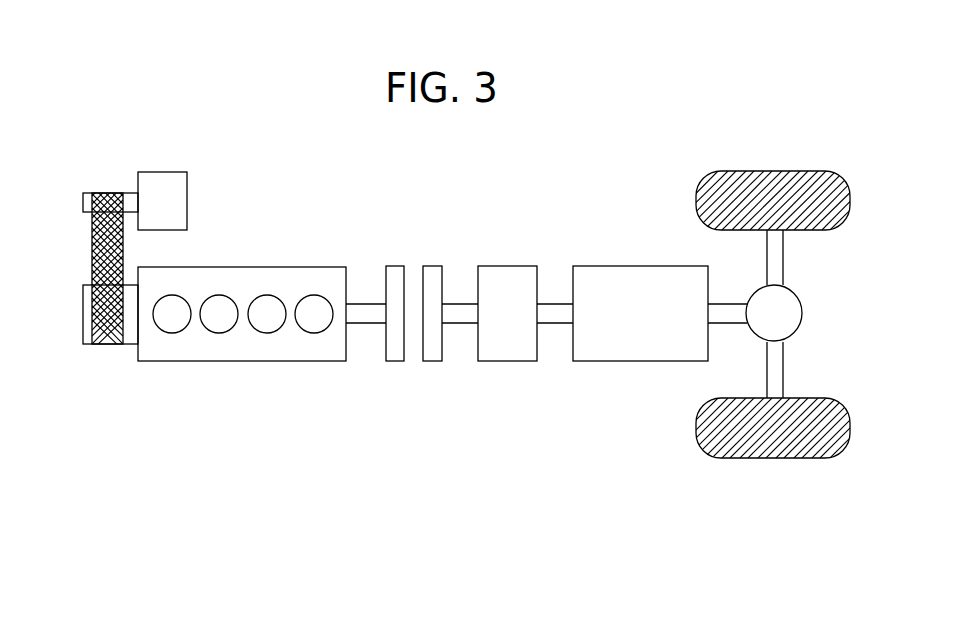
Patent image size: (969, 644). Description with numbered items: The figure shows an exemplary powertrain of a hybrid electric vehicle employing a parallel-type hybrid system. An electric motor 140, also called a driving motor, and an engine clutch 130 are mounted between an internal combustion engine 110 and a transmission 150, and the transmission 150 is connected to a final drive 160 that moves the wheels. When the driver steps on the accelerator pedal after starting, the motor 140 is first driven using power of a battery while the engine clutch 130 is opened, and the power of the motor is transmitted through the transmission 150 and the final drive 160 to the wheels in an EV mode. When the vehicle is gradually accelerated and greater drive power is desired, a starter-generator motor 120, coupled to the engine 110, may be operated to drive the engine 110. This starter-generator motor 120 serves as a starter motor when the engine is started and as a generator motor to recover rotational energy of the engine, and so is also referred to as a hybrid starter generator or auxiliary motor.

The internal combustion engine 110 is at (297, 264).
The starter-generator motor 120 is at (188, 185).
The engine clutch 130 is at (435, 265).
The electric motor 140 is at (512, 265).
The transmission 150 is at (673, 264).
The final drive 160 is at (802, 298).